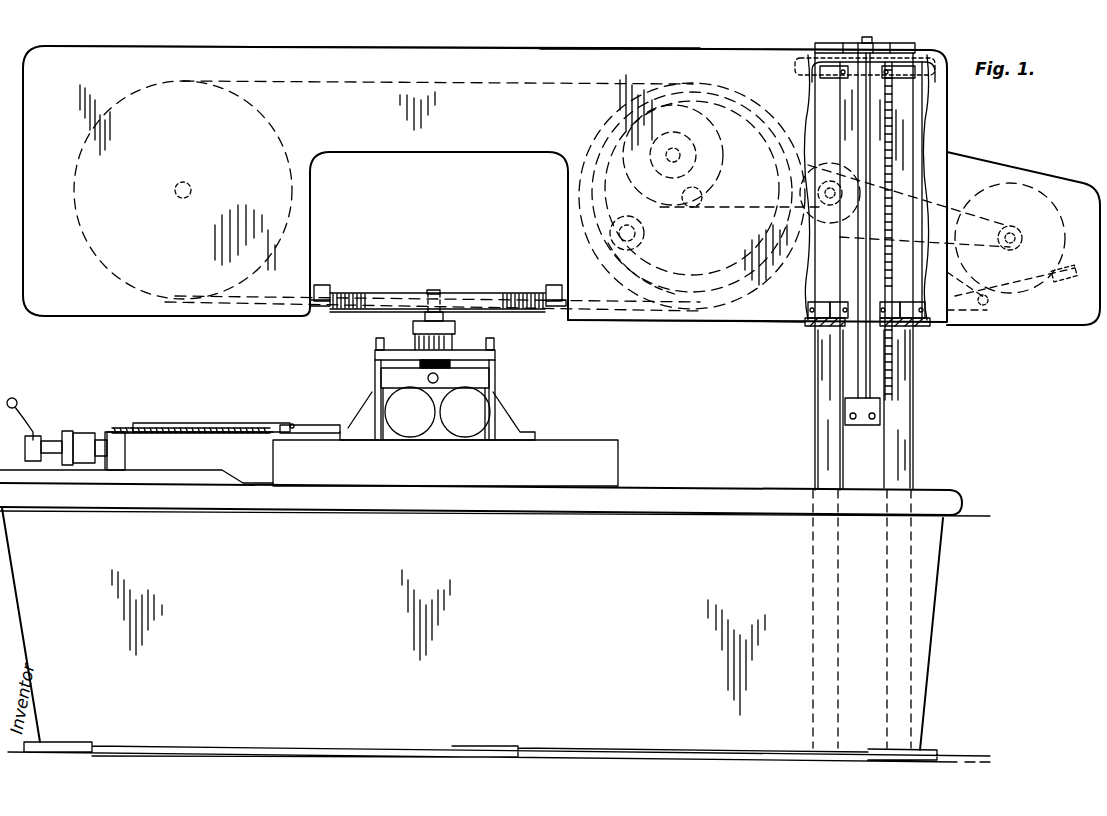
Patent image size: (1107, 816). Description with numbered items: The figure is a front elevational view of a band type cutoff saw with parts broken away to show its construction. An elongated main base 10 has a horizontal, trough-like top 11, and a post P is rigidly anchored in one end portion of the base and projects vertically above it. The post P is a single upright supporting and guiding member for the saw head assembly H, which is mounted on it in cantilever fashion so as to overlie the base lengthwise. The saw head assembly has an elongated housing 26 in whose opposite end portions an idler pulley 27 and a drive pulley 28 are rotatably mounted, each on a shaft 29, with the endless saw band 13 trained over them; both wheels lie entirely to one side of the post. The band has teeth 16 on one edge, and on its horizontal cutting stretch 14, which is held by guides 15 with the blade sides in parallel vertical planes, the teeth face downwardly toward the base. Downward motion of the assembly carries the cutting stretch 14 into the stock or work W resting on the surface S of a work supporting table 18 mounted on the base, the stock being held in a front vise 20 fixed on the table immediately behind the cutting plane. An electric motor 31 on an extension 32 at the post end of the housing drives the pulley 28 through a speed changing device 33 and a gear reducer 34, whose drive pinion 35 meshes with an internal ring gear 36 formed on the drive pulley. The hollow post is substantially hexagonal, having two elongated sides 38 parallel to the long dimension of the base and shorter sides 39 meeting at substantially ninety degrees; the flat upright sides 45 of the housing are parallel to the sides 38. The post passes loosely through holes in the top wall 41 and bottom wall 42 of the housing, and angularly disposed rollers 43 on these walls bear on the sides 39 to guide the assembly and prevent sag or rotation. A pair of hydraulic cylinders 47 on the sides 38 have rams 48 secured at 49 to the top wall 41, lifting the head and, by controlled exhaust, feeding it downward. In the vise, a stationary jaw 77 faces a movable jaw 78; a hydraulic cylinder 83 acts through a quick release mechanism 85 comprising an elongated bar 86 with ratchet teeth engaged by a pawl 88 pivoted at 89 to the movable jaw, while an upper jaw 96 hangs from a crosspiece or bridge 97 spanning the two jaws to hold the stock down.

The main base 10 is at (977, 601).
The trough-like top 11 is at (740, 485).
The endless saw band 13 is at (340, 82).
The cutting stretch 14 is at (408, 315).
The guides 15 is at (318, 286).
The teeth 16 is at (390, 315).
The work supporting table 18 is at (605, 462).
The front vise 20 is at (456, 382).
The housing 26 is at (450, 150).
The idler pulley 27 is at (272, 128).
The drive pulley 28 is at (765, 118).
The shaft 29 is at (186, 183).
The electric motor 31 is at (1030, 185).
The extension 32 is at (1058, 318).
The speed changing device 33 is at (800, 178).
The gear reducer 34 is at (692, 92).
The drive pinion 35 is at (640, 234).
The internal ring gear 36 is at (678, 283).
The elongated sides of post 38 is at (878, 461).
The shorter sides of post 39 is at (825, 402).
The top wall 41 is at (678, 50).
The bottom wall 42 is at (700, 332).
The rollers 43 is at (910, 62).
The upright sides of housing 45 is at (548, 68).
The hydraulic cylinders 47 is at (855, 362).
The rams 48 is at (865, 140).
The ram securement 49 is at (872, 44).
The stationary jaw 77 is at (493, 392).
The movable jaw 78 is at (380, 372).
The hydraulic cylinder 83 is at (82, 432).
The quick release mechanism 85 is at (173, 410).
The elongated bar 86 is at (130, 425).
The pawl 88 is at (224, 423).
The pivotal connection 89 is at (292, 424).
The upper jaw 96 is at (497, 370).
The crosspiece or bridge 97 is at (462, 352).
The saw head assembly H is at (487, 58).
The post P is at (905, 392).
The work supporting surface S is at (598, 438).
The stock or work W is at (395, 412).